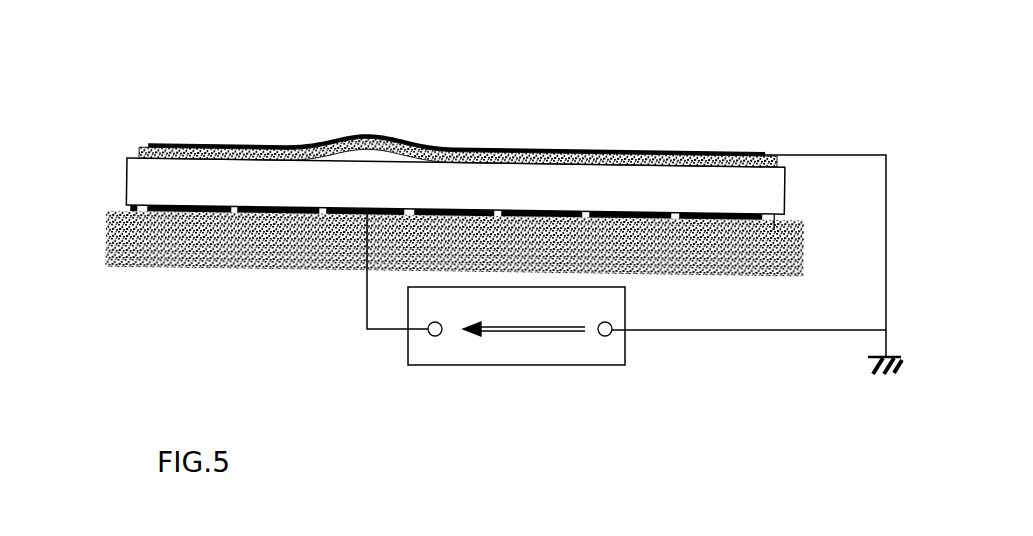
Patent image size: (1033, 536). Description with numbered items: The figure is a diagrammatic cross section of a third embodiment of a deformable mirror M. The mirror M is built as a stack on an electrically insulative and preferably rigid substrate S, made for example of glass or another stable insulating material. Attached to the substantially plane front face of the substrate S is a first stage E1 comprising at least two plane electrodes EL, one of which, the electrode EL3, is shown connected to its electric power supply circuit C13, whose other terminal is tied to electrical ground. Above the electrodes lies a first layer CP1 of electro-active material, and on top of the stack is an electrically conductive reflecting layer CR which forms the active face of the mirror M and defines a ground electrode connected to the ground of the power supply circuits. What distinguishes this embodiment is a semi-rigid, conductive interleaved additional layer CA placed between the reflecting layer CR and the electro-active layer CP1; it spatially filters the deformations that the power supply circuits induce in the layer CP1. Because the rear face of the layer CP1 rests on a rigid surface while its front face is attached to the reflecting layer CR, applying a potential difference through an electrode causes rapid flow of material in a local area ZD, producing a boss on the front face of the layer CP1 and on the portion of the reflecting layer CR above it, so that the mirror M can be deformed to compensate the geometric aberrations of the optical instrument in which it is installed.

The deformable mirror M is at (767, 108).
The first electro-active layer CP1 is at (127, 157).
The electrically conductive reflecting layer CR is at (232, 143).
The deformed area ZD is at (365, 127).
The interleaved additional layer CA is at (478, 157).
The plane electrodes EL is at (703, 213).
The first stage E1 is at (135, 207).
The substrate S is at (185, 265).
The third electrode EL3 is at (348, 212).
The electric power supply circuit C13 is at (408, 352).